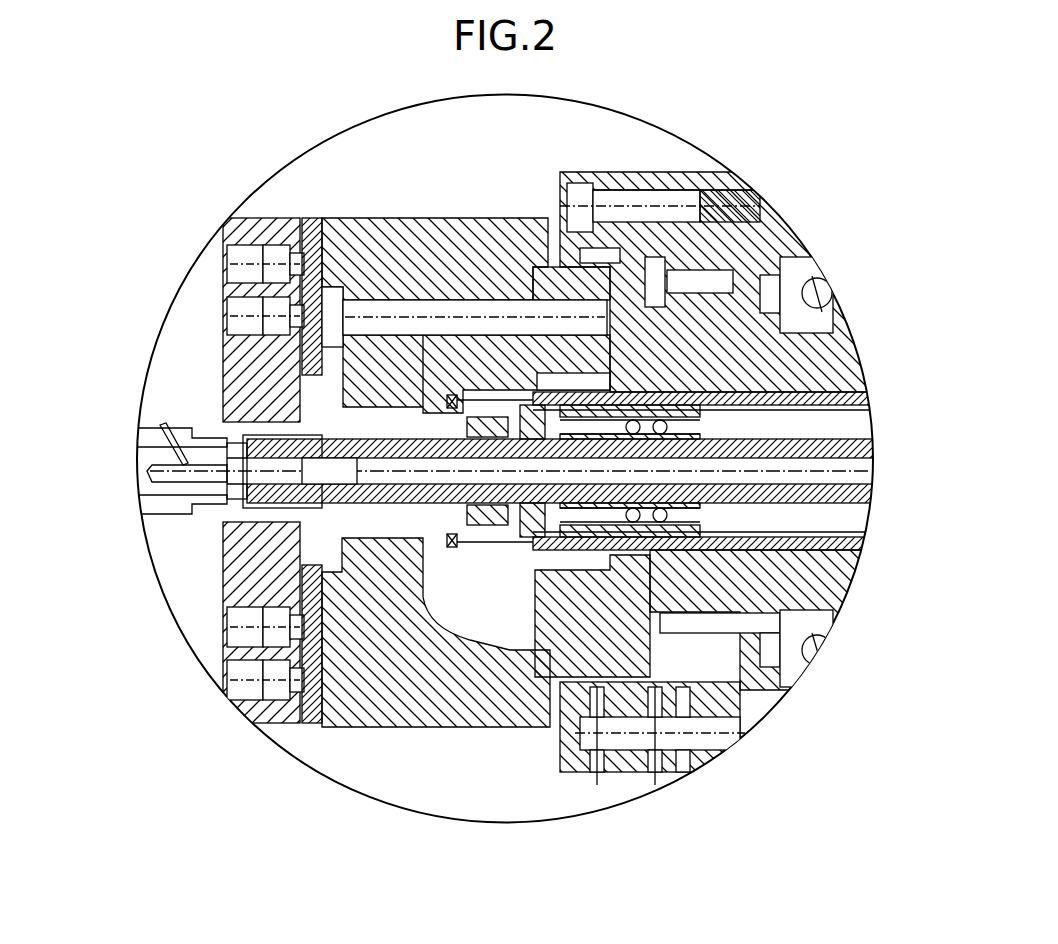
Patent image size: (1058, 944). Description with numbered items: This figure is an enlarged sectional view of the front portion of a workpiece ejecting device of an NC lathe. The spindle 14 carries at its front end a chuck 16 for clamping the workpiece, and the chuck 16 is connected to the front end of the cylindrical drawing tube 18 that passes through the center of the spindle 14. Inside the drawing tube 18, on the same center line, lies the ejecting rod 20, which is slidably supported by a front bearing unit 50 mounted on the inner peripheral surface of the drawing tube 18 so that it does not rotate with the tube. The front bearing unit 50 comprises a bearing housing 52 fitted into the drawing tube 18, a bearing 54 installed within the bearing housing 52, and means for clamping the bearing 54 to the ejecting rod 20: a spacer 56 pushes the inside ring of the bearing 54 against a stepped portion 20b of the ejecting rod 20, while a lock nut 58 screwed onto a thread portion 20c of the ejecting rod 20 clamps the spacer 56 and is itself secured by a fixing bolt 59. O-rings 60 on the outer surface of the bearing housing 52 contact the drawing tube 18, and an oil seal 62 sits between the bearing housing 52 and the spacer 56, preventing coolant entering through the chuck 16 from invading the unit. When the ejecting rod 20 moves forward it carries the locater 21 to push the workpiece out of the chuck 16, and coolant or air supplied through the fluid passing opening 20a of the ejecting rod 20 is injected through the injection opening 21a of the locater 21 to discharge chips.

The spindle 14 is at (858, 372).
The chuck 16 is at (370, 727).
The drawing tube 18 is at (800, 394).
The ejecting rod 20 is at (740, 440).
The fluid passing opening 20a is at (715, 440).
The stepped portion 20b is at (730, 667).
The thread portion 20c is at (312, 705).
The locater 21 is at (148, 480).
The injection opening 21a is at (162, 428).
The front bearing unit 50 is at (735, 280).
The bearing housing 52 is at (608, 405).
The bearing 54 is at (640, 405).
The spacer 56 is at (497, 300).
The lock nut 58 is at (476, 356).
The fixing bolt 59 is at (425, 330).
The O-ring 60 is at (568, 417).
The oil seal 62 is at (515, 530).